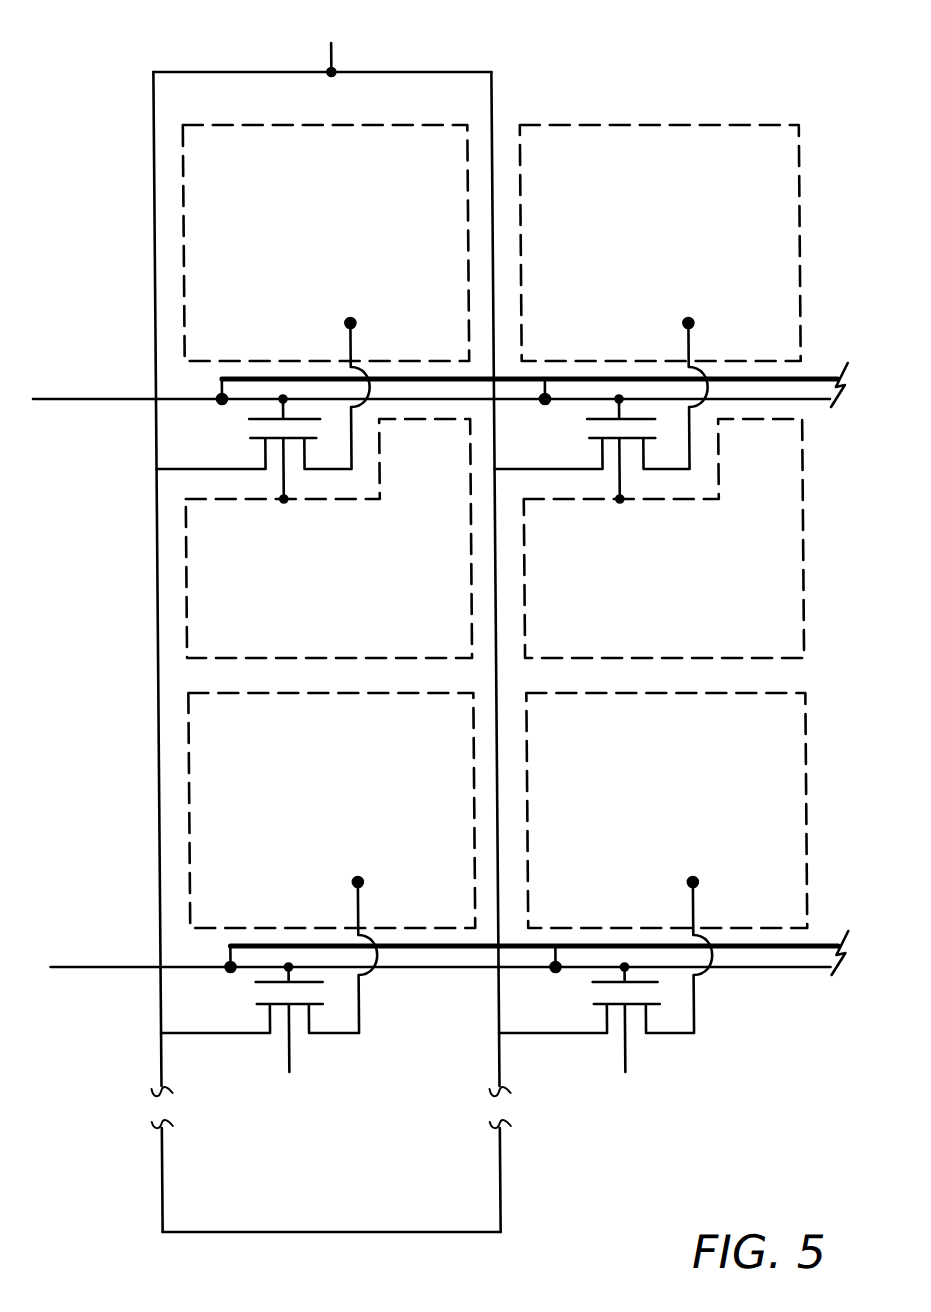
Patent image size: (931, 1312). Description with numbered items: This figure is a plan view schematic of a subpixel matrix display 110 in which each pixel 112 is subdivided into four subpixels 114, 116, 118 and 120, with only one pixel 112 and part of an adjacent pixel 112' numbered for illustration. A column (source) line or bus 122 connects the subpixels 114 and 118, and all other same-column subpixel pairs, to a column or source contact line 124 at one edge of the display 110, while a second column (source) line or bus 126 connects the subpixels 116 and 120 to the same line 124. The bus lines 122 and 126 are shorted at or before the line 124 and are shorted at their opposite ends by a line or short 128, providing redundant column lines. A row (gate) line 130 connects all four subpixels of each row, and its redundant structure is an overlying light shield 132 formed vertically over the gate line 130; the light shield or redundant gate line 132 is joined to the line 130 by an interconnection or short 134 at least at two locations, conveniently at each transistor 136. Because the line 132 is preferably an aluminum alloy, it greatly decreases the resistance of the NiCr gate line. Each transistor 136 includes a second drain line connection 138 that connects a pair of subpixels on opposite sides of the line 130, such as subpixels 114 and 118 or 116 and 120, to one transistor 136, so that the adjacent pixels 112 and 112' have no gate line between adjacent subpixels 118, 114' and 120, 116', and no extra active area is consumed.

The subpixel matrix display 110 is at (135, 432).
The pixel 112 is at (552, 110).
The adjacent pixel 112' is at (558, 1107).
The subpixel 114 is at (326, 243).
The subpixel of adjacent pixel 114' is at (331, 810).
The subpixel 116 is at (660, 243).
The subpixel of adjacent pixel 116' is at (666, 810).
The subpixel 118 is at (360, 576).
The subpixel 120 is at (693, 578).
The column (source) line 122 is at (157, 268).
The column (source) contact line 124 is at (336, 56).
The second column (source) line 126 is at (494, 83).
The line or short 128 is at (366, 1232).
The row (gate) line 130 is at (72, 402).
The light shield or redundant gate line 132 is at (546, 380).
The interconnection or short 134 is at (221, 398).
The transistor 136 is at (368, 447).
The second drain line connection 138 is at (353, 345).